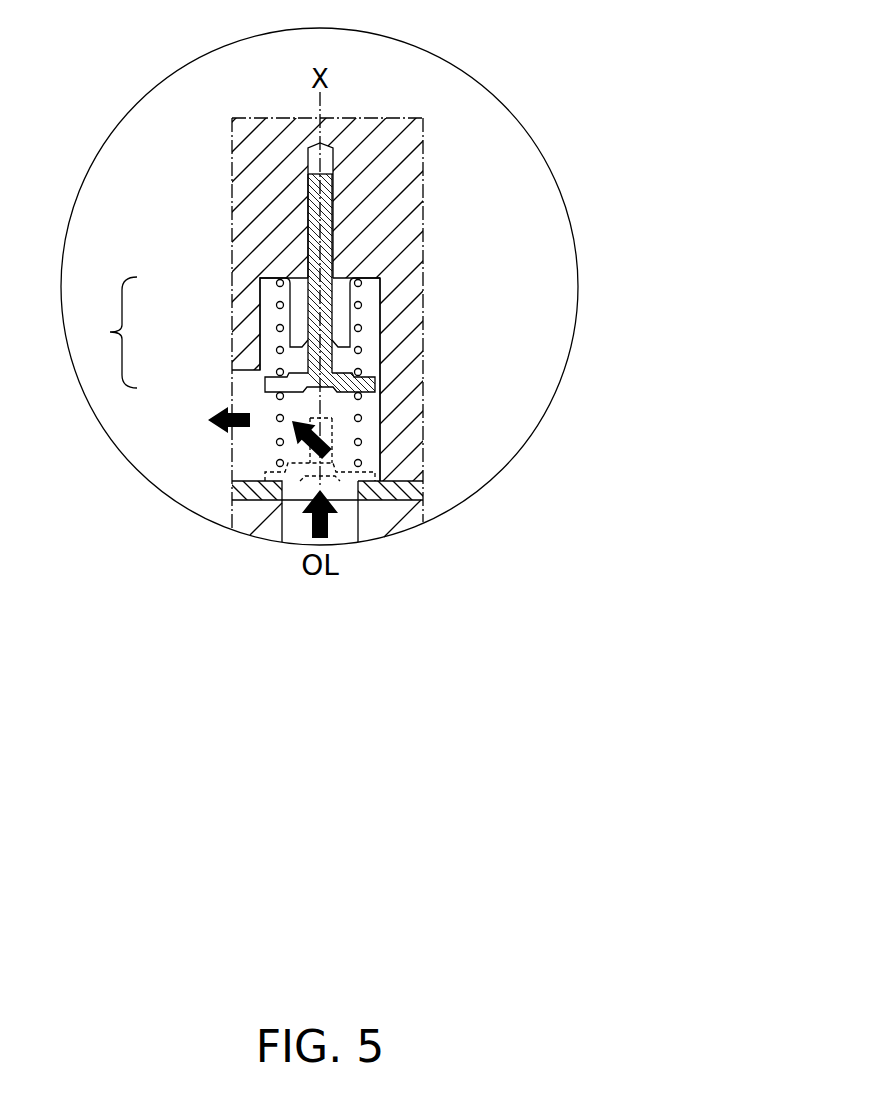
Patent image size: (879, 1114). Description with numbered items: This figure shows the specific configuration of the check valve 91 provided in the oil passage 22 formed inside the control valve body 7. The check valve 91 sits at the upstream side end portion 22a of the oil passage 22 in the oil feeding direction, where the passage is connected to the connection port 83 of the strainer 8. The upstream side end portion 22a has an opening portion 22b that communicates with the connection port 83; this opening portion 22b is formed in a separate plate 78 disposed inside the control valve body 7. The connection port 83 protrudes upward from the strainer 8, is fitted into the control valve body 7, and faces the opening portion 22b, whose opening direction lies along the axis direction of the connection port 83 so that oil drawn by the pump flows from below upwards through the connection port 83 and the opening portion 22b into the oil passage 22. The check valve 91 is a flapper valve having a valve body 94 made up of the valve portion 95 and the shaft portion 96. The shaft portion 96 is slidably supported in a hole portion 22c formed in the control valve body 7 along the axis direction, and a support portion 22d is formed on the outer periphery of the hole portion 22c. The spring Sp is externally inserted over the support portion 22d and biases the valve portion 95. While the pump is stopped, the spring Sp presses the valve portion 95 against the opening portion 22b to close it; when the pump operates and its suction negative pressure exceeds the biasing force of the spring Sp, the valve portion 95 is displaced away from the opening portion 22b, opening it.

The control valve body 7 is at (378, 117).
The strainer 8 is at (397, 532).
The oil passage 22 is at (376, 300).
The upstream side end portion 22a is at (343, 303).
The opening portion 22b is at (282, 483).
The hole portion 22c is at (335, 170).
The support portion 22d is at (355, 290).
The separate plate 78 is at (423, 488).
The connection port 83 is at (352, 538).
The check valve 91 is at (367, 363).
The valve body 94 is at (103, 332).
The valve portion 95 is at (265, 385).
The shaft portion 96 is at (303, 291).
The spring Sp is at (361, 417).